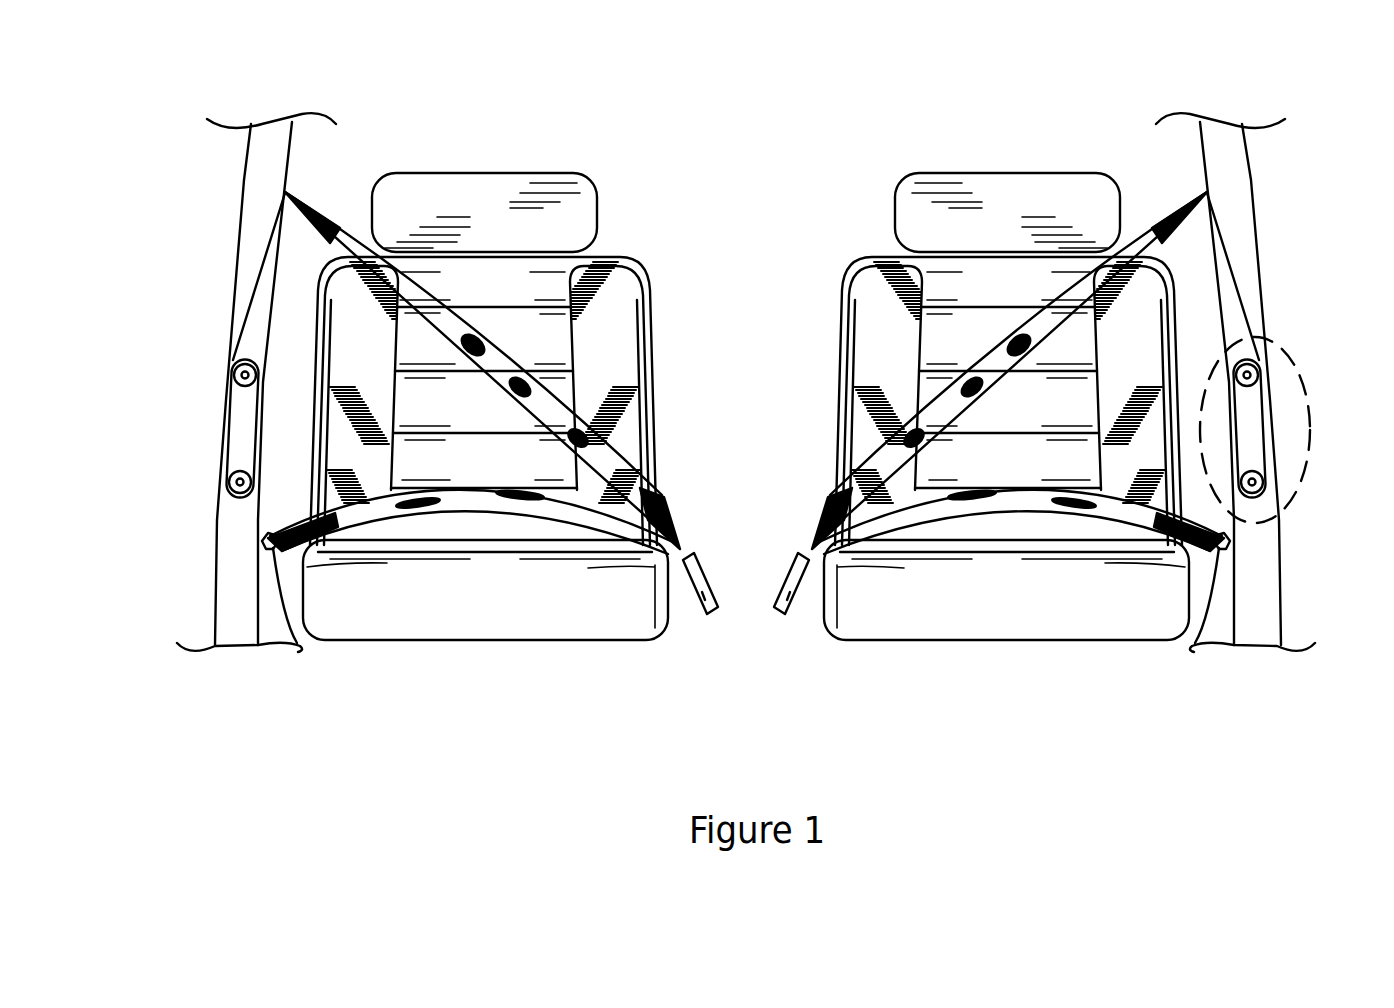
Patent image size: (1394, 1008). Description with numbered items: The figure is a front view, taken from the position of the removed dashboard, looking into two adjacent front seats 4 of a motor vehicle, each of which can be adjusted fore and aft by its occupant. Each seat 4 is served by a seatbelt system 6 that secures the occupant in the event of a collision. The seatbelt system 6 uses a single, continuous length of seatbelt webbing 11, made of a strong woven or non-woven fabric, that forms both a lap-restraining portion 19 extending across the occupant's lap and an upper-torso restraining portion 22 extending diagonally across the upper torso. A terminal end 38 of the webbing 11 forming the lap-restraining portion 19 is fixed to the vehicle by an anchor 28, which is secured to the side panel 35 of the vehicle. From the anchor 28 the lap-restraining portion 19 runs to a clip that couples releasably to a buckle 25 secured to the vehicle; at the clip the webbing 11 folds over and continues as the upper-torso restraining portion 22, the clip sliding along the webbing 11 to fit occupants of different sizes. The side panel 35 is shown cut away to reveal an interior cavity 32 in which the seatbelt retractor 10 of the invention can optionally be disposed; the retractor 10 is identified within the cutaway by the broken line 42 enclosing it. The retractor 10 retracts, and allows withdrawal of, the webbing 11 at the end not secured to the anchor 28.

The front seat 4 is at (637, 256).
The seatbelt system 6 is at (672, 518).
The seatbelt retractor 10 is at (226, 408).
The seatbelt webbing 11 is at (260, 258).
The lap-restraining portion 19 is at (471, 502).
The upper-torso restraining portion 22 is at (368, 253).
The buckle 25 is at (702, 592).
The anchor 28 is at (262, 543).
The interior cavity 32 is at (1242, 238).
The side panel 35 is at (1253, 173).
The terminal end 38 is at (297, 643).
The broken line 42 is at (1290, 362).